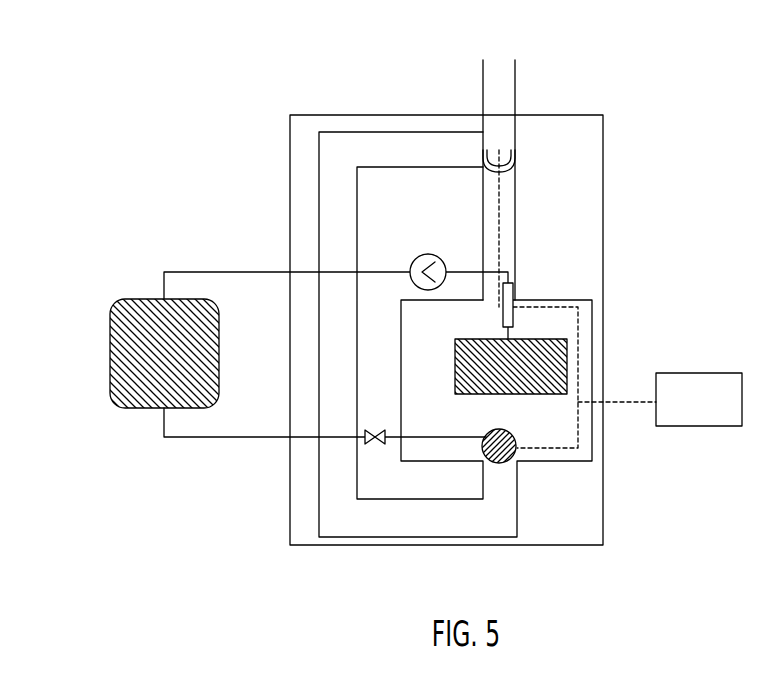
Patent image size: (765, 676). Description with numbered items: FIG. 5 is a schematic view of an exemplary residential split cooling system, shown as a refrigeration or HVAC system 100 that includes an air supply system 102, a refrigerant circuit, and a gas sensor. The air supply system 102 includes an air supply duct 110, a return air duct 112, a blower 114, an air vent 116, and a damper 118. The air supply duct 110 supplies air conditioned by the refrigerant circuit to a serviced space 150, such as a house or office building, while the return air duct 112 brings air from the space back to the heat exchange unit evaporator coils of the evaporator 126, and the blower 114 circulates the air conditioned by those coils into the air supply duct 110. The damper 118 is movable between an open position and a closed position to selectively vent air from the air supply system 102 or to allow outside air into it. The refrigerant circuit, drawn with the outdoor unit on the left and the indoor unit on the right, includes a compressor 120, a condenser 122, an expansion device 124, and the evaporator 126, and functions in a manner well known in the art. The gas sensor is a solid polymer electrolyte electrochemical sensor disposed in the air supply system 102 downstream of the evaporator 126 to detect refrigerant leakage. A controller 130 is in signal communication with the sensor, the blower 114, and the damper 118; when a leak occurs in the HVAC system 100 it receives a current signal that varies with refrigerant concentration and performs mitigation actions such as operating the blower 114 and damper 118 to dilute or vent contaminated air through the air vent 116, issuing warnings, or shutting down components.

The HVAC system 100 is at (185, 165).
The air supply system 102 is at (419, 124).
The air supply duct 110 is at (513, 207).
The return air duct 112 is at (366, 524).
The blower 114 is at (494, 463).
The air vent 116 is at (483, 71).
The damper 118 is at (500, 145).
The compressor 120 is at (430, 254).
The condenser 122 is at (110, 346).
The expansion device 124 is at (365, 441).
The evaporator 126 is at (577, 366).
The controller 130 is at (685, 411).
The serviced space 150 is at (514, 318).